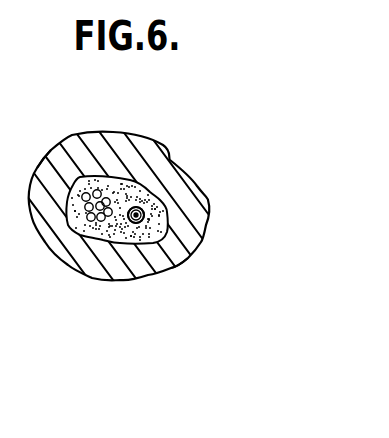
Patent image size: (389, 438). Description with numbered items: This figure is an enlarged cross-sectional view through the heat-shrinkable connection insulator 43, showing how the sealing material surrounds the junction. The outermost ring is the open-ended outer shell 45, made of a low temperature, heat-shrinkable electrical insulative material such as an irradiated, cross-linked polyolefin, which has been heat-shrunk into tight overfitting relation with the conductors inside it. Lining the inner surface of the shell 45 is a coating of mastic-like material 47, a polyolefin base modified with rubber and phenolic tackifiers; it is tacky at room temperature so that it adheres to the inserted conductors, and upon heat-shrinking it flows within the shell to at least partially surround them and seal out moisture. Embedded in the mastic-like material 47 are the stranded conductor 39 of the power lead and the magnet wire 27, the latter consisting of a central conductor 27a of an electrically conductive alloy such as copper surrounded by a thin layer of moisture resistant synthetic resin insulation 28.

The magnet wire 27 is at (146, 215).
The central conductor 27a is at (168, 258).
The insulation layer 28 is at (142, 208).
The conductor of power lead 39 is at (97, 192).
The heat-shrinkable connection insulator 43 is at (48, 257).
The outer shell 45 is at (52, 174).
The mastic-like material 47 is at (105, 237).